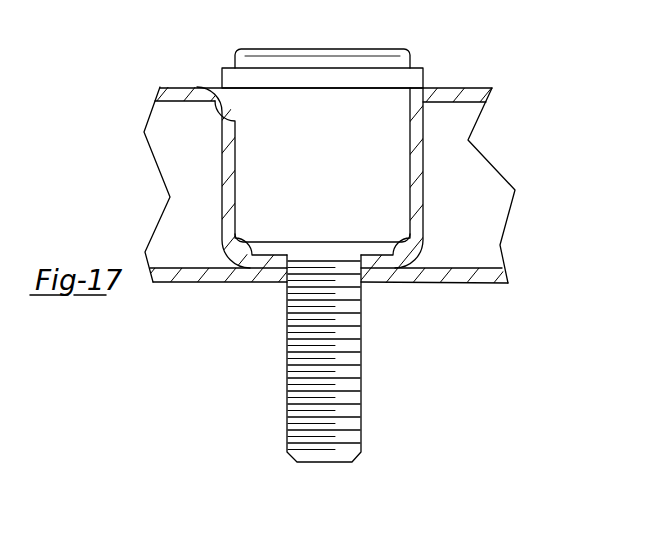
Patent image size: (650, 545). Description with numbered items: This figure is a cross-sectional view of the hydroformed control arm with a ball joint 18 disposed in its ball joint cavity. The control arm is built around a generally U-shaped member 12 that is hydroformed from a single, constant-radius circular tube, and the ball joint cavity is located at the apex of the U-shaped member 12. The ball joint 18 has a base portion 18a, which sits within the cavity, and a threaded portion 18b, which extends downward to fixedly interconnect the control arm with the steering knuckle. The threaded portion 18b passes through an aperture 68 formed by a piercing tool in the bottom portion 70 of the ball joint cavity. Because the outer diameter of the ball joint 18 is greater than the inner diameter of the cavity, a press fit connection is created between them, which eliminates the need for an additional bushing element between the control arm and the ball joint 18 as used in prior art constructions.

The U-shaped member 12 is at (492, 88).
The ball joint 18 is at (353, 56).
The base portion 18a is at (412, 95).
The threaded portion 18b is at (340, 404).
The aperture 68 is at (362, 282).
The bottom portion 70 is at (246, 270).